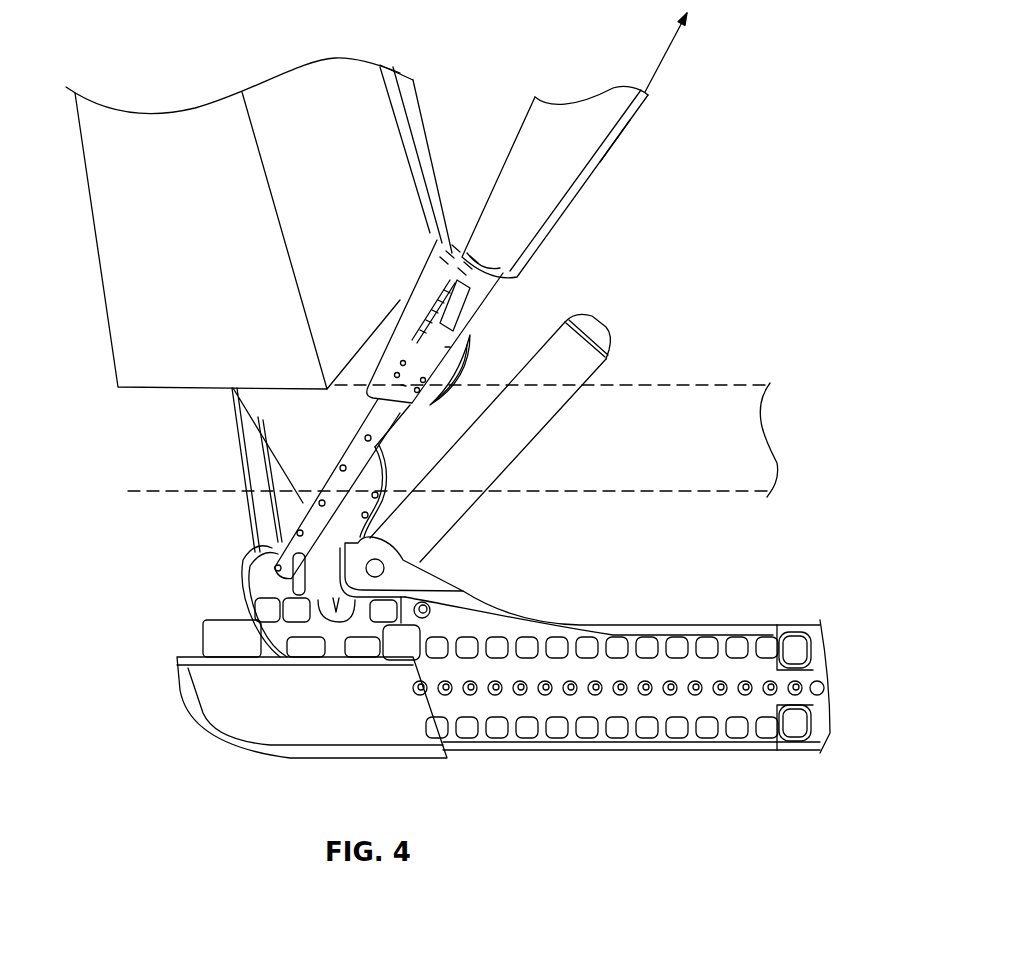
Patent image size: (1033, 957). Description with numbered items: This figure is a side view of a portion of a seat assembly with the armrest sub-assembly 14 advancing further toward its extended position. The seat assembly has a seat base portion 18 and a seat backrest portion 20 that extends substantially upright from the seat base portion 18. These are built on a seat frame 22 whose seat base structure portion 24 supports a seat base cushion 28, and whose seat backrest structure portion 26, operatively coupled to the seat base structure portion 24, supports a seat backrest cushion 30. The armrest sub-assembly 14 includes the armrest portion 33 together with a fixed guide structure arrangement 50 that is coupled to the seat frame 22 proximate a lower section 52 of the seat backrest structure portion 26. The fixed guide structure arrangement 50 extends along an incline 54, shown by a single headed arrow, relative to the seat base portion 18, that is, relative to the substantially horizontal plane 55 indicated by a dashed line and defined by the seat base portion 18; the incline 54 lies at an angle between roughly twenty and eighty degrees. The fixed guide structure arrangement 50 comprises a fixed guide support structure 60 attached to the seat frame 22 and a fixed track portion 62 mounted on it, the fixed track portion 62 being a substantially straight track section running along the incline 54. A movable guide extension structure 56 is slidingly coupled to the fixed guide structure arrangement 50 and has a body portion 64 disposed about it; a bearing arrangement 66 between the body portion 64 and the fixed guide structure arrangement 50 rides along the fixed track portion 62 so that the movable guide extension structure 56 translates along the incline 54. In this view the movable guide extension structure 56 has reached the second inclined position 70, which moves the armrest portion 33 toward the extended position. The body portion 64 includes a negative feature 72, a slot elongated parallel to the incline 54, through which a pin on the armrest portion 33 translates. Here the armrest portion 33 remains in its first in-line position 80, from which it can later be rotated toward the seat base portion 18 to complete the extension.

The armrest sub-assembly 14 is at (547, 250).
The seat base portion 18 is at (650, 383).
The seat backrest portion 20 is at (423, 107).
The seat frame 22 is at (240, 582).
The seat base structure portion 24 is at (648, 705).
The seat backrest structure portion 26 is at (308, 430).
The seat base cushion 28 is at (725, 383).
The seat backrest cushion 30 is at (435, 147).
The armrest portion 33 is at (590, 130).
The fixed guide structure arrangement 50 is at (343, 468).
The lower section 52 is at (307, 487).
The incline 54 is at (663, 50).
The substantially horizontal plane 55 is at (627, 492).
The movable guide extension structure 56 is at (442, 348).
The fixed guide support structure 60 is at (360, 502).
The fixed track portion 62 is at (297, 543).
The body portion 64 is at (397, 363).
The bearing arrangement 66 is at (455, 370).
The second inclined position 70 is at (440, 418).
The negative feature 72 is at (487, 267).
The first in-line position 80 is at (607, 163).